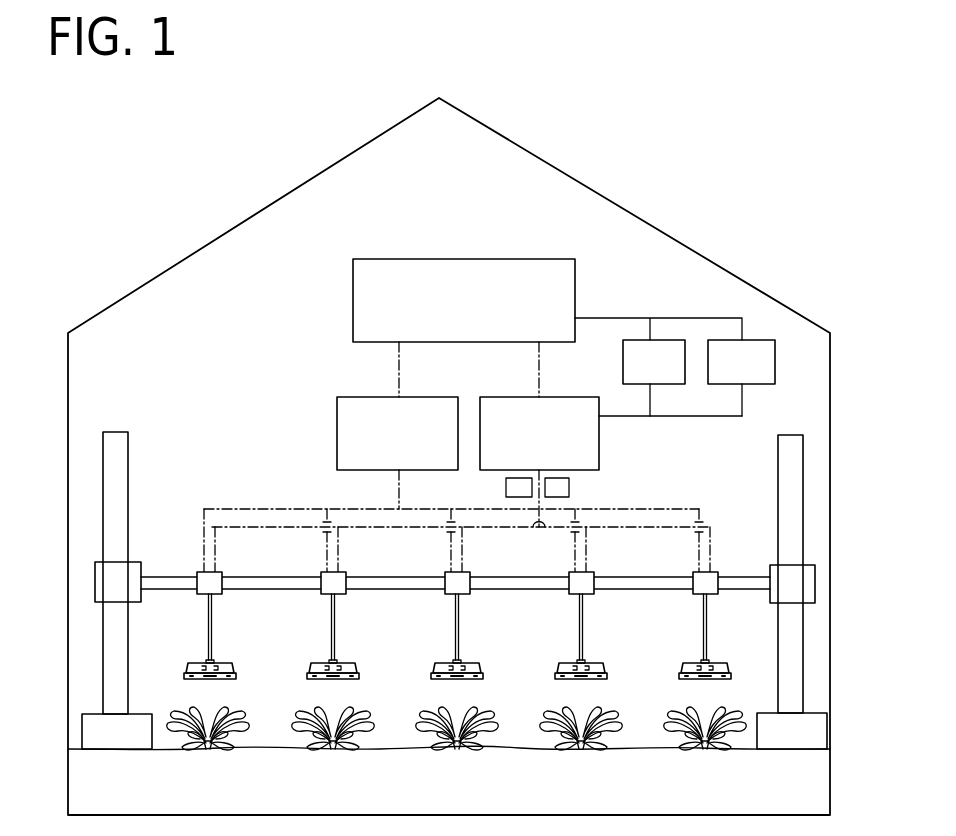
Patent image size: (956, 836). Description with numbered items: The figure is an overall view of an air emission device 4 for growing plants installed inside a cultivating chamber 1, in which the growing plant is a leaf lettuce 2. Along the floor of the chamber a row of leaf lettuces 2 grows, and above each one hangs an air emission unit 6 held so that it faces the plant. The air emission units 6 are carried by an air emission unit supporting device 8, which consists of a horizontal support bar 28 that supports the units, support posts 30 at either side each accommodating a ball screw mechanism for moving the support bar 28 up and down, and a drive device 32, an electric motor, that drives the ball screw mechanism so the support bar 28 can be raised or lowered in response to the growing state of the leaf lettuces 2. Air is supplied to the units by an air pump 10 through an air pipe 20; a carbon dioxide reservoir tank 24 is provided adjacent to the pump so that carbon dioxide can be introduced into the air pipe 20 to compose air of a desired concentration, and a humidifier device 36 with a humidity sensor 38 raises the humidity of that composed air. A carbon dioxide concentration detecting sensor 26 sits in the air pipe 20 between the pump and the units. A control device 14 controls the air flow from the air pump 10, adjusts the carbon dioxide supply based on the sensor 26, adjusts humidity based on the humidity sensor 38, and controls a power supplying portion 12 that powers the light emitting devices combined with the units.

The cultivating chamber 1 is at (229, 272).
The leaf lettuce 2 is at (178, 712).
The air emission device for growing plants 4 is at (189, 371).
The air emission units 6 is at (310, 669).
The air emission unit supporting device 8 is at (455, 573).
The air pump 10 is at (600, 440).
The power supplying portion 12 is at (357, 431).
The control device 14 is at (575, 281).
The air pipe 20 is at (712, 541).
The carbon dioxide reservoir tank 24 is at (622, 352).
The carbon dioxide concentration detecting sensor 26 is at (570, 485).
The support bar 28 is at (181, 576).
The support posts 30 is at (123, 479).
The drive device 32 is at (97, 714).
The humidifier device 36 is at (775, 362).
The humidity sensor 38 is at (506, 487).